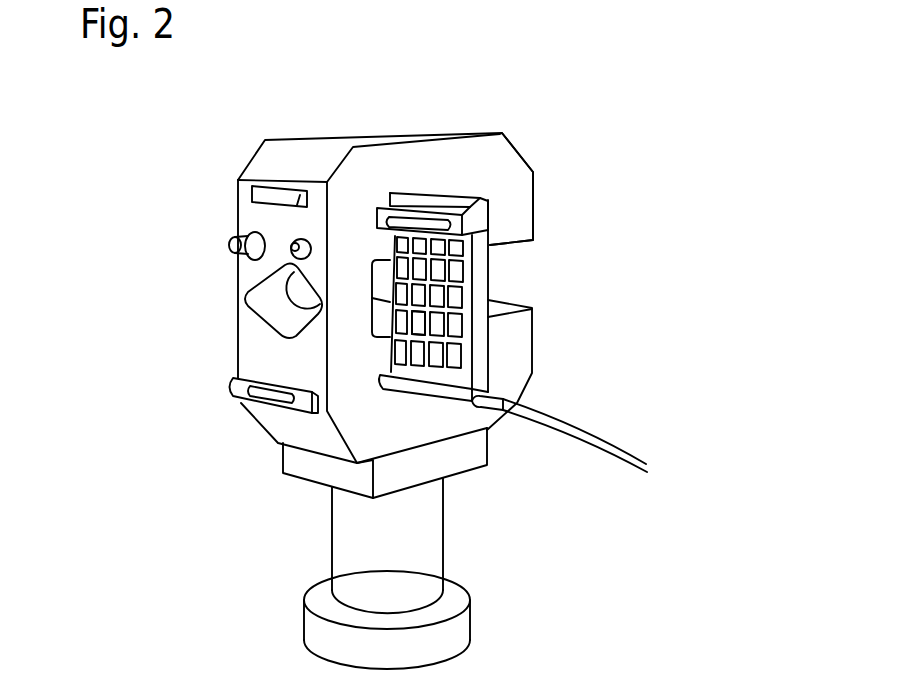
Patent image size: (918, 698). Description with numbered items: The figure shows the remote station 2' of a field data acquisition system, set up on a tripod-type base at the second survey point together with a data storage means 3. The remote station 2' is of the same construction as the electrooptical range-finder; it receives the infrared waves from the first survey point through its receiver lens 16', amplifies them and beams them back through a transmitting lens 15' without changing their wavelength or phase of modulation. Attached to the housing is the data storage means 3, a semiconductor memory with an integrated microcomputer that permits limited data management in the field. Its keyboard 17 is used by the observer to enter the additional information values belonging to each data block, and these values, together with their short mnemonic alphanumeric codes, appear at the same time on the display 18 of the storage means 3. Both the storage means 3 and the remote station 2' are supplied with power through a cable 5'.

The remote station 2' is at (381, 354).
The data storage means 3 is at (481, 278).
The cable 5' is at (563, 422).
The transmitting lens 15' is at (560, 169).
The receiver lens 16' is at (566, 357).
The keyboard 17 is at (420, 328).
The display 18 is at (417, 220).